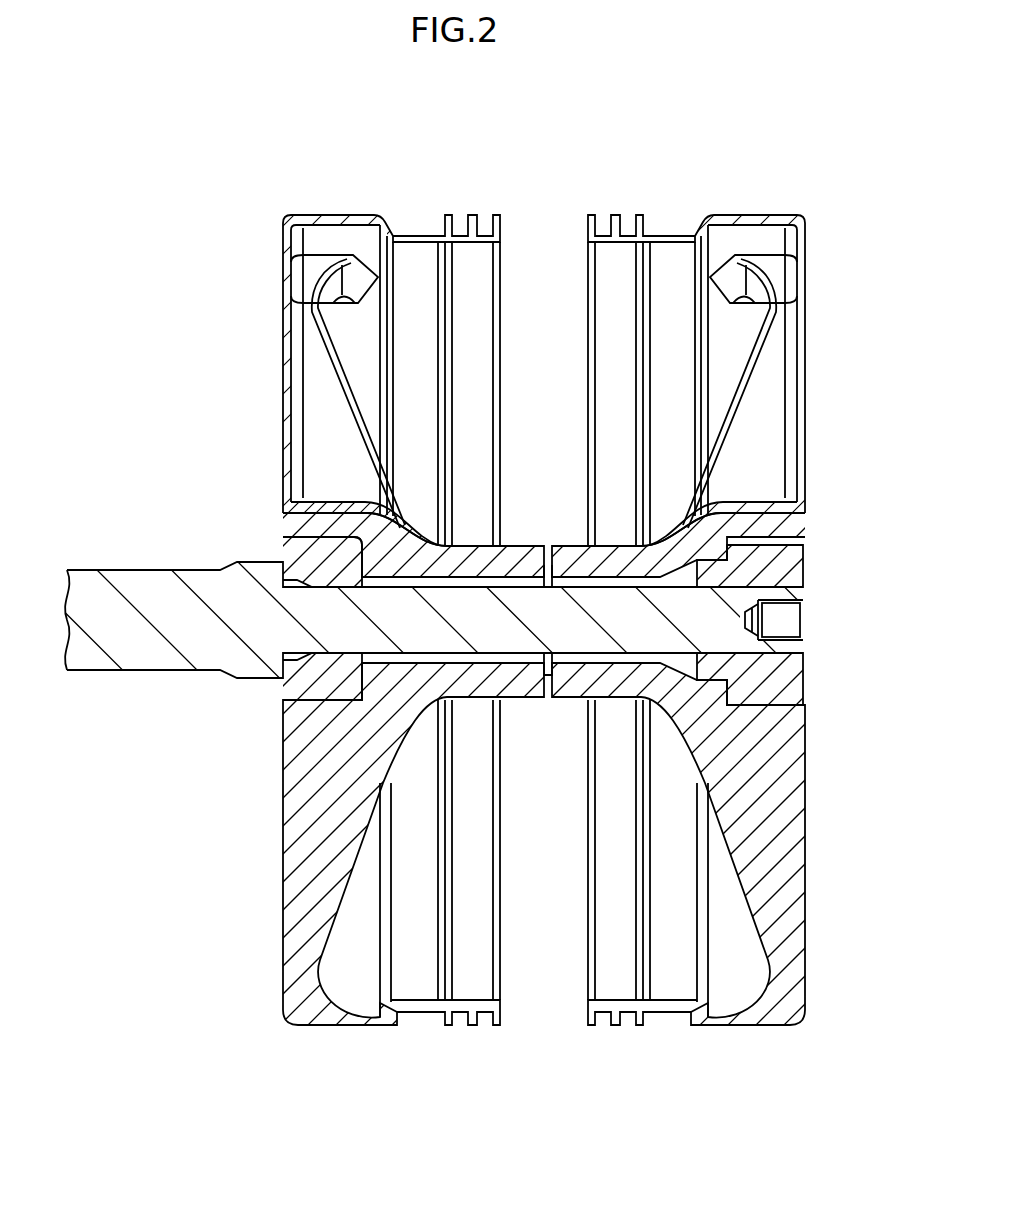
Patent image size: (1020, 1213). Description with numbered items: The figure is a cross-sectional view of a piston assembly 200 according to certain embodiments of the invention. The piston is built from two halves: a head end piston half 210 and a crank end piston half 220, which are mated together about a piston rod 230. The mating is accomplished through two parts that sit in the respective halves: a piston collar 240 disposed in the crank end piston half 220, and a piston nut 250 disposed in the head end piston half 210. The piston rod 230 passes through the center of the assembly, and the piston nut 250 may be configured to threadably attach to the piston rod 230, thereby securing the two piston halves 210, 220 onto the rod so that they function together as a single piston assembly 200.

The piston assembly 200 is at (624, 158).
The head end (HE) piston half 210 is at (740, 208).
The crank end (CE) piston half 220 is at (346, 208).
The piston rod 230 is at (185, 617).
The piston collar 240 is at (292, 541).
The piston nut 250 is at (770, 678).